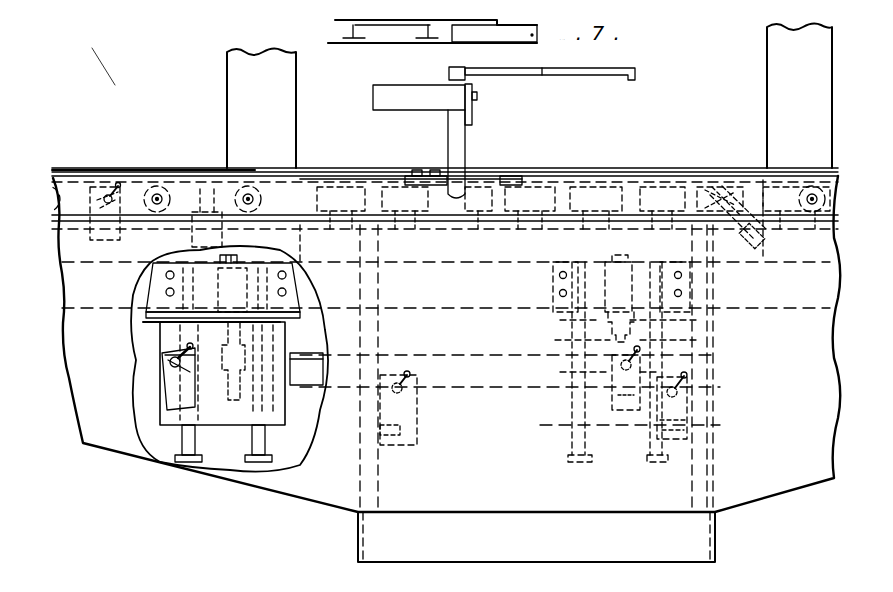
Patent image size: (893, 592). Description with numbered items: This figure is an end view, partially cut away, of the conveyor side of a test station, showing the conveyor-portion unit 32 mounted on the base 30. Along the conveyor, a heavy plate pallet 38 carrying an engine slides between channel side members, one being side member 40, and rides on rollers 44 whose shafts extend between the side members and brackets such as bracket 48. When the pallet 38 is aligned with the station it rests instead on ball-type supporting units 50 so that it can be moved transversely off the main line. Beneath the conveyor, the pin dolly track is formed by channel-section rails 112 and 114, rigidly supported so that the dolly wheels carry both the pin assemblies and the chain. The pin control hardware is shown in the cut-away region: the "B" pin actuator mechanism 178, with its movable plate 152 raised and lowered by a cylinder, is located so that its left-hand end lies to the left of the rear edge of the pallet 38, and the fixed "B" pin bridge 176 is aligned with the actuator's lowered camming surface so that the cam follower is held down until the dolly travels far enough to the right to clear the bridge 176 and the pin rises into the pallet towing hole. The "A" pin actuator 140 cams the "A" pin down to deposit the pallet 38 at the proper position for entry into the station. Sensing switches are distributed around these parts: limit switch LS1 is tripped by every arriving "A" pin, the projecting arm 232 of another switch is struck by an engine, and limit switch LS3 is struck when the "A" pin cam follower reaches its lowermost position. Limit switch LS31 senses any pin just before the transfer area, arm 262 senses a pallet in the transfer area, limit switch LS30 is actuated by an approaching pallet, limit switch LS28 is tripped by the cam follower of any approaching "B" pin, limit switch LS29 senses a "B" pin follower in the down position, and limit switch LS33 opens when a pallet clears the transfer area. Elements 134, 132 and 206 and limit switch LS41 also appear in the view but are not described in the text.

The limit switch LS30 is at (89, 168).
The rollers 44 is at (154, 185).
The limit switch LS31 is at (206, 178).
The plate pallet 38 is at (312, 166).
The bar 134 is at (372, 195).
The arm 262 is at (467, 178).
The ball-type supporting units 50 is at (607, 167).
The channel side member 40 is at (638, 168).
The limit switch LS33 is at (738, 185).
The projecting arm 232 is at (650, 64).
The block 132 is at (405, 62).
The bracket 48 is at (796, 244).
The channel-section rail 114 is at (128, 298).
The channel-section rail 112 is at (283, 300).
The "B" pin bridge 176 is at (320, 362).
The limit switch LS28 is at (170, 380).
The "B" pin actuator mechanism 178 is at (177, 428).
The movable plate 152 is at (232, 418).
The limit switch LS29 is at (398, 412).
The "A" pin actuator 140 is at (560, 406).
The limit switch LS1 is at (632, 413).
The limit switch LS3 is at (690, 385).
The conveyor-portion unit 32 is at (320, 517).
The limit switch LS41 is at (330, 591).
The base 30 is at (552, 548).
The member 206 is at (370, 591).